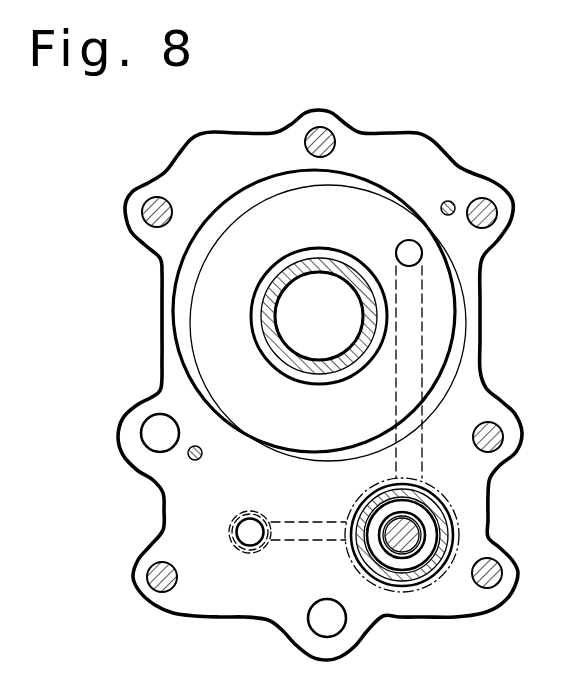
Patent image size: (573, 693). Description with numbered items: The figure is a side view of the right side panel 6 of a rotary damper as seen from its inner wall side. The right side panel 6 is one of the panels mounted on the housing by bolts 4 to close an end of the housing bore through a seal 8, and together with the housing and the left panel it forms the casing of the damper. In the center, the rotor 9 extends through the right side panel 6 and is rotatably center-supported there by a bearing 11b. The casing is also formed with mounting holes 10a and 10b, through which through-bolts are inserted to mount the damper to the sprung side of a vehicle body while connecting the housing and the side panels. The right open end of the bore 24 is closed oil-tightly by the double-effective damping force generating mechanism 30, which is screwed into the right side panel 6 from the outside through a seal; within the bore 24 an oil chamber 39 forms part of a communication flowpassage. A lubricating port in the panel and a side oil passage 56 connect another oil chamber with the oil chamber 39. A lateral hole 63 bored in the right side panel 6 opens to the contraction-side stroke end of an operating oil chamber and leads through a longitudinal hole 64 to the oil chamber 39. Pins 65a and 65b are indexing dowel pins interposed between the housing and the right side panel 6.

The bolts 4 is at (305, 136).
The right side panel 6 is at (410, 163).
The seal 8 is at (182, 318).
The rotor 9 is at (285, 355).
The mounting hole 10a is at (306, 624).
The mounting hole 10b is at (145, 432).
The bearing 11b is at (273, 273).
The bore 24 is at (394, 580).
The double-effective damping force generating mechanism 30 is at (424, 582).
The oil chamber 39 is at (448, 529).
The side oil passage 56 is at (308, 540).
The lateral hole 63 is at (409, 253).
The longitudinal hole 64 is at (422, 338).
The indexing dowel pin 65a is at (454, 207).
The indexing dowel pin 65b is at (190, 458).